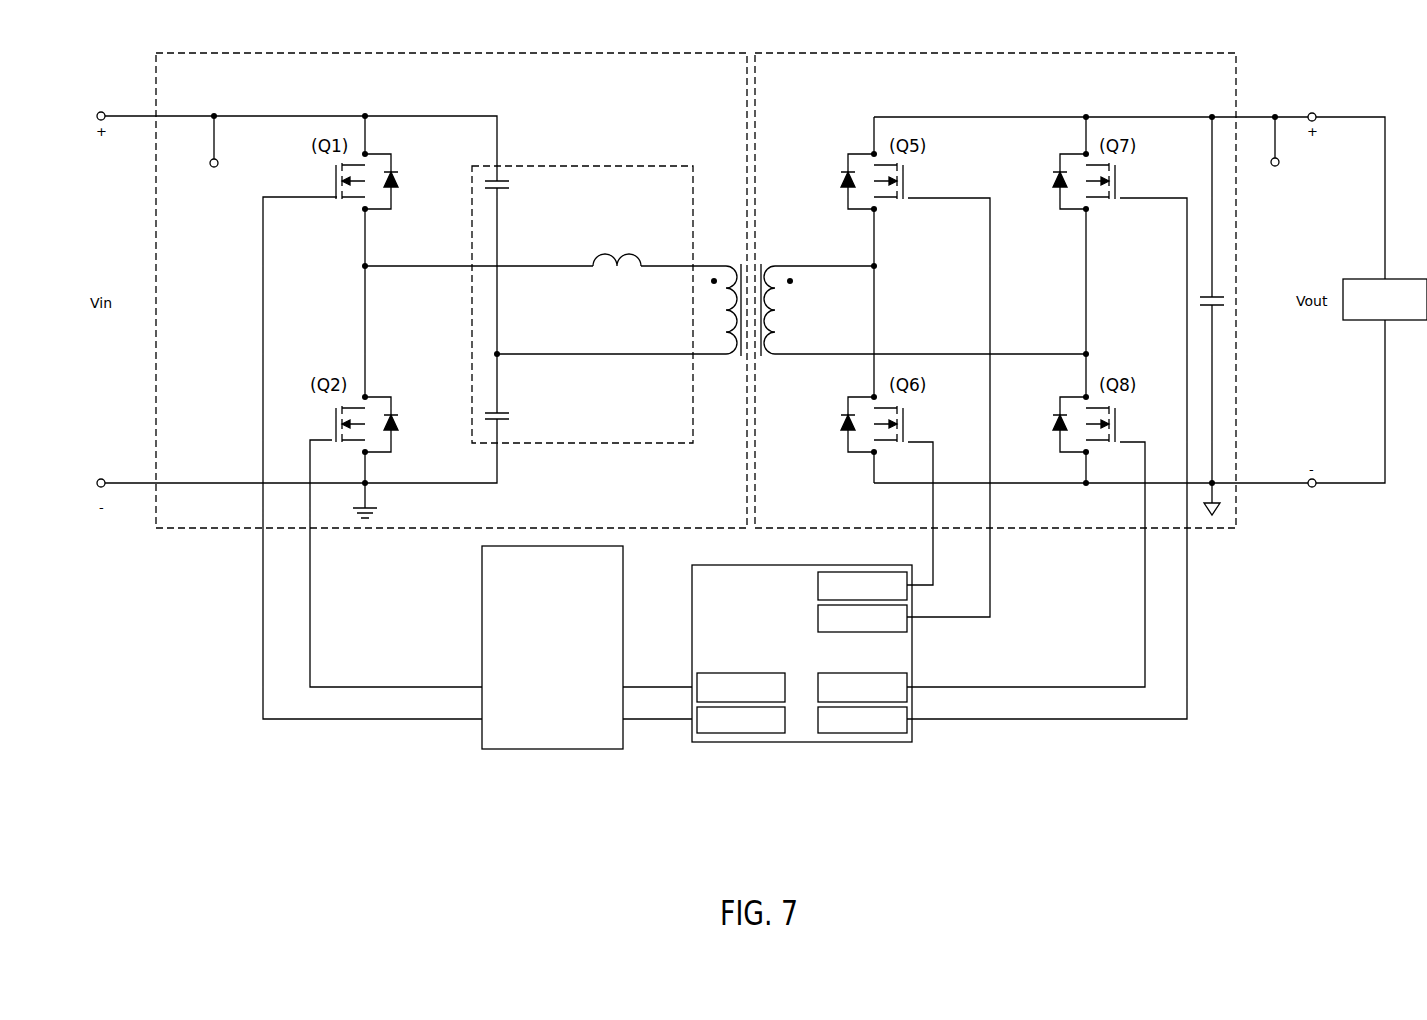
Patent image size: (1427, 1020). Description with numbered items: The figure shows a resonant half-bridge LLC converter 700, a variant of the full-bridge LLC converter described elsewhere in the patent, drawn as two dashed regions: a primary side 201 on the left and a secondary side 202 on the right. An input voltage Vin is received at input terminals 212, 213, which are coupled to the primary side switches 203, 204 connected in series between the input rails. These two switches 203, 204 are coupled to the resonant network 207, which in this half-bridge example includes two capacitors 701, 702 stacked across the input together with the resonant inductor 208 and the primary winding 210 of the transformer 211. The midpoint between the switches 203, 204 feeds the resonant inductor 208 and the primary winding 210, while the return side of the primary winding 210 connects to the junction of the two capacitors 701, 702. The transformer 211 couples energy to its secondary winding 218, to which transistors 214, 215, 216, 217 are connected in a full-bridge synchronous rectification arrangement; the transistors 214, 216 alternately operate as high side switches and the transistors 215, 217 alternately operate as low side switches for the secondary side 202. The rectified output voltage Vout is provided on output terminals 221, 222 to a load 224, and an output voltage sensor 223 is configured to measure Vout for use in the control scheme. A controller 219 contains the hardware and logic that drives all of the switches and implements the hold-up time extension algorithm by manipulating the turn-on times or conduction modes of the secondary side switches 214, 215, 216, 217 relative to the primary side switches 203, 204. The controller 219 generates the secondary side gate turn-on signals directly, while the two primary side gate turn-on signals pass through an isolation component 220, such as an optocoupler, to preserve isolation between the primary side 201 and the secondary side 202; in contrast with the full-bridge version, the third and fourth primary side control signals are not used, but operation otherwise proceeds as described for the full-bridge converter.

The resonant half-bridge LLC converter 700 is at (136, 42).
The primary side 201 is at (156, 96).
The secondary side 202 is at (1237, 62).
The switch 203 is at (336, 186).
The switch 204 is at (332, 430).
The resonant network 207 is at (633, 166).
The resonant inductor 208 is at (637, 255).
The primary winding 210 is at (726, 266).
The transformer 211 is at (769, 379).
The input terminal 212 is at (101, 120).
The input terminal 213 is at (97, 483).
The transistor 214 is at (908, 188).
The transistor 215 is at (908, 433).
The transistor 216 is at (1120, 188).
The transistor 217 is at (1120, 433).
The secondary winding 218 is at (776, 266).
The controller 219 is at (802, 565).
The isolation component 220 is at (623, 568).
The output terminal 221 is at (1312, 113).
The output terminal 222 is at (1312, 487).
The output voltage sensor 223 is at (210, 163).
The load 224 is at (1365, 279).
The capacitor 701 is at (499, 191).
The capacitor 702 is at (503, 411).